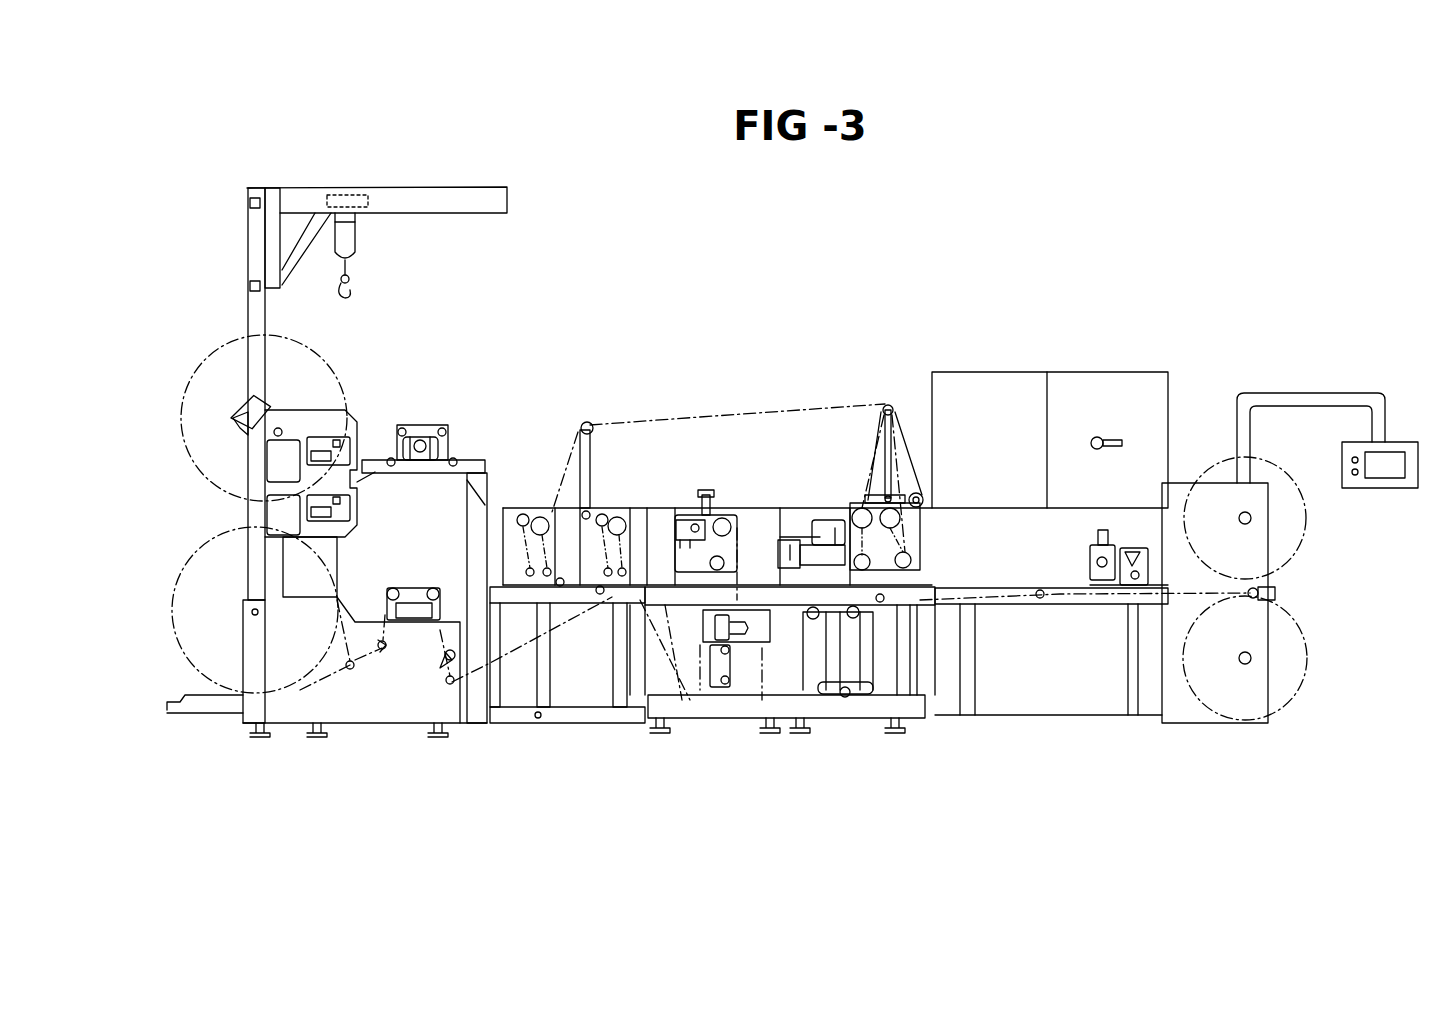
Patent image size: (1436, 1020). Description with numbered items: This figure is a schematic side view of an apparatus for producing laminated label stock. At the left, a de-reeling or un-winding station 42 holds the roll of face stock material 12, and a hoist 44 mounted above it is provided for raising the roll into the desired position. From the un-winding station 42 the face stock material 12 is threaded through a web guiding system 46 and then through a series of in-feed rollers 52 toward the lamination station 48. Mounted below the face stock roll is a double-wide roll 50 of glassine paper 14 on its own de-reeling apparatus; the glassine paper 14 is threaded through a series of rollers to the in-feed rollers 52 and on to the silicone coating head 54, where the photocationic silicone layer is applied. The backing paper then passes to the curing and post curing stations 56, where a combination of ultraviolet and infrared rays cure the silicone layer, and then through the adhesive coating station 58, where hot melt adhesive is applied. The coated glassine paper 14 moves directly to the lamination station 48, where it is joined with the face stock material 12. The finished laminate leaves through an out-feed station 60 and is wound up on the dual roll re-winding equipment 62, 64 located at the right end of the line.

The face stock material 12 is at (495, 513).
The glassine paper 14 is at (372, 660).
The un-winding station 42 is at (345, 385).
The hoist 44 is at (248, 267).
The web guiding system 46 is at (420, 425).
The lamination station 48 is at (905, 495).
The double-wide roll 50 is at (172, 596).
The in-feed rollers 52 is at (600, 512).
The silicone coating head 54 is at (712, 505).
The curing and post curing stations 56 is at (810, 612).
The adhesive coating station 58 is at (887, 405).
The out-feed station 60 is at (1128, 555).
The re-winding equipment 62 is at (1307, 530).
The re-winding equipment 64 is at (1310, 640).